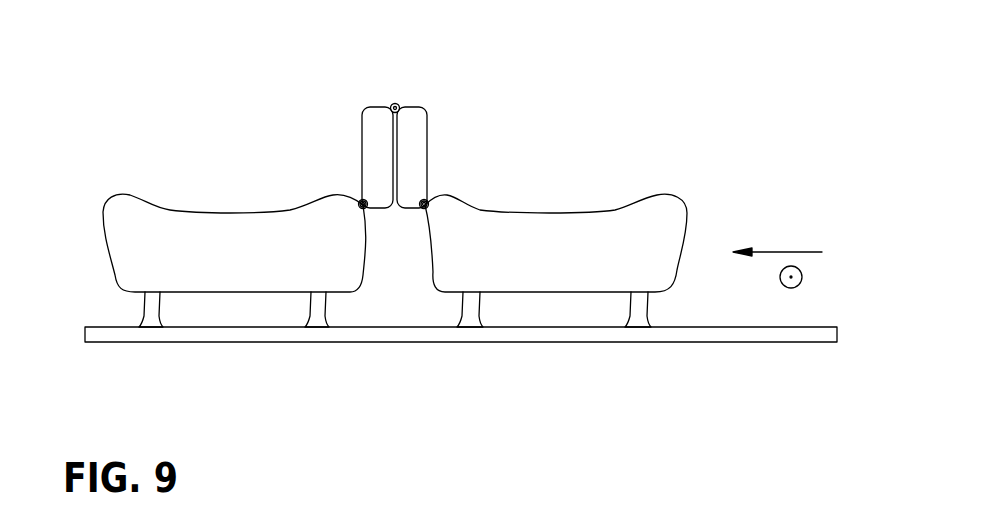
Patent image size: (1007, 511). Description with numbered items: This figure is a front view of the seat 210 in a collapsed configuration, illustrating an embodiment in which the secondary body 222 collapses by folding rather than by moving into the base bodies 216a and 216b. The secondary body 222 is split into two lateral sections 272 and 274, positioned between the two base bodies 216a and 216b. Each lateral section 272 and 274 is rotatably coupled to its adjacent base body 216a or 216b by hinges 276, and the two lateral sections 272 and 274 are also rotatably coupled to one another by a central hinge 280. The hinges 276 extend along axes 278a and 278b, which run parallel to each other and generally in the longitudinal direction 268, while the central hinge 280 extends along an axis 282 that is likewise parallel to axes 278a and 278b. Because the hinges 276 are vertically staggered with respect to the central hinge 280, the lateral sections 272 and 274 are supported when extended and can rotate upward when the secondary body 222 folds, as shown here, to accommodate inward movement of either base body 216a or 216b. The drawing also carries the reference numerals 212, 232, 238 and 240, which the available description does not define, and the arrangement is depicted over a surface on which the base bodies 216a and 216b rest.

The seat 210 is at (202, 140).
The vehicle seating system 212 is at (709, 172).
The base body 216a is at (650, 220).
The base body 216b is at (150, 218).
The secondary body 222 is at (427, 100).
The direction of movement arrow 232 is at (784, 252).
The seat legs 238 is at (150, 302).
The floor 240 is at (757, 332).
The longitudinal direction 268 is at (803, 277).
The lateral section 272 is at (410, 133).
The lateral section 274 is at (373, 133).
The hinges 276 is at (362, 200).
The axis 278a is at (428, 202).
The axis 278b is at (363, 208).
The central hinge 280 is at (393, 105).
The axis 282 is at (396, 104).